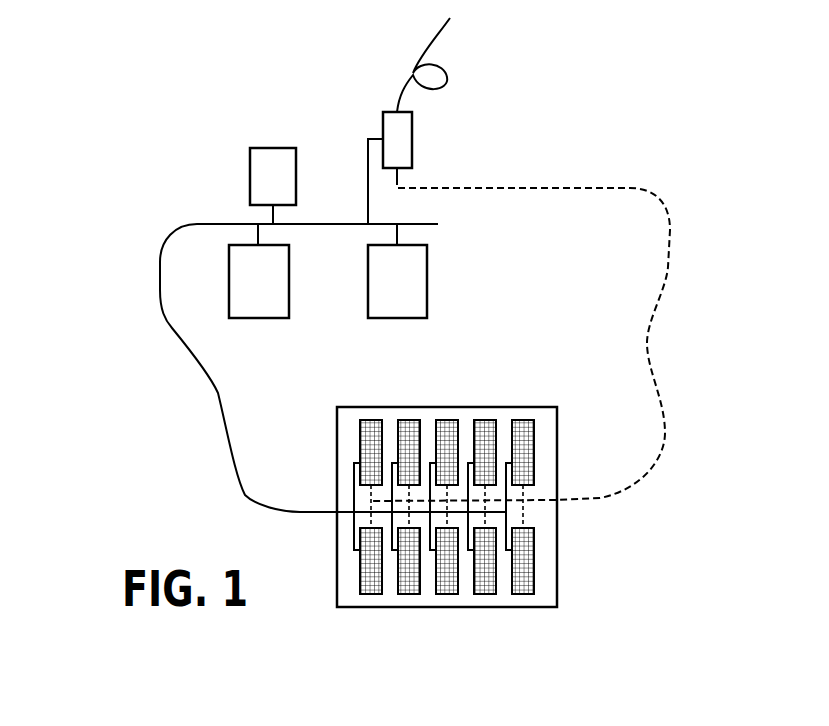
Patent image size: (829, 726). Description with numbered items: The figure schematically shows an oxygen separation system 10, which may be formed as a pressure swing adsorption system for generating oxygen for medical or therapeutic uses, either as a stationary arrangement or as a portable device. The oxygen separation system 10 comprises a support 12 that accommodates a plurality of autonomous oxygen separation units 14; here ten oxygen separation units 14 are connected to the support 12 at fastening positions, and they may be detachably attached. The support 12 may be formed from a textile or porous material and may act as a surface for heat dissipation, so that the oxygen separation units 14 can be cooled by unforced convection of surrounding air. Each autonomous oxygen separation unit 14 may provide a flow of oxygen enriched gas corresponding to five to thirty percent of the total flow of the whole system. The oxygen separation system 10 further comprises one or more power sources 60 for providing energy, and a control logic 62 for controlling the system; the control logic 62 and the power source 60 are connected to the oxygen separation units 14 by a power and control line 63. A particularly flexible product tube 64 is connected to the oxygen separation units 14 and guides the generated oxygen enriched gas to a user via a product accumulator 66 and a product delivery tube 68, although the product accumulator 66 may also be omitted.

The oxygen separation system 10 is at (138, 80).
The support 12 is at (547, 555).
The autonomous oxygen separation unit 14 is at (372, 423).
The power source 60 is at (277, 280).
The control logic 62 is at (257, 173).
The power and control line 63 is at (172, 328).
The product tube 64 is at (668, 275).
The product accumulator 66 is at (407, 140).
The product delivery tube 68 is at (432, 32).